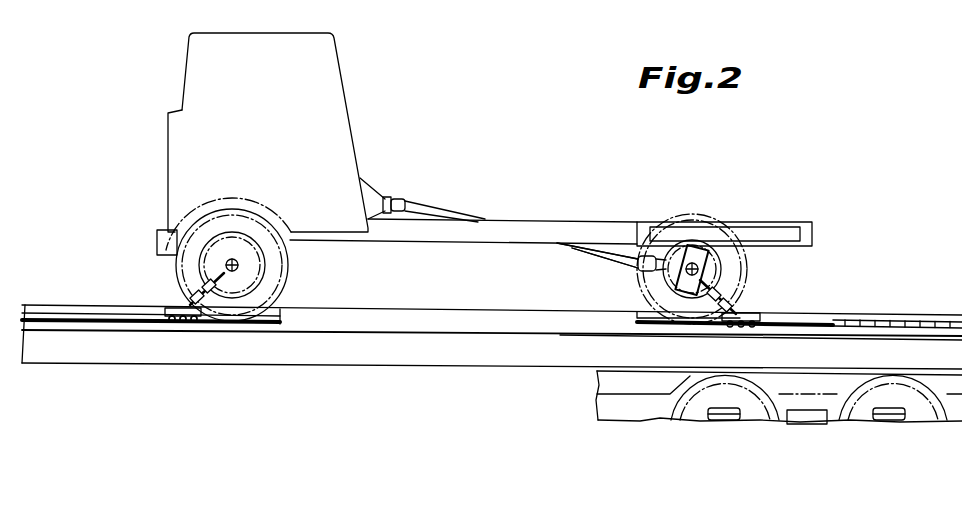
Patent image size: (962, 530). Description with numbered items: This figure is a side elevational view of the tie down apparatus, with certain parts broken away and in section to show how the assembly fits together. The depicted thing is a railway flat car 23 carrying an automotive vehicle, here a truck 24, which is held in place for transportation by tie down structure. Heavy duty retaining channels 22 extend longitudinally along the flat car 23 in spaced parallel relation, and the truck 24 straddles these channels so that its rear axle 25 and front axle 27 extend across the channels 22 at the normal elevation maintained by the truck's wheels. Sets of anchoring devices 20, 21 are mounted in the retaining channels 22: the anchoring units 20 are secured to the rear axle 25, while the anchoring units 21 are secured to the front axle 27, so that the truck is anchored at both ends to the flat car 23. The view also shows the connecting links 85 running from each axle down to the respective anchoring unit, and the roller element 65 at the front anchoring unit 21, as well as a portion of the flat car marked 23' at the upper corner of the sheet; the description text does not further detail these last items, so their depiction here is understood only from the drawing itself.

The anchoring device 20 is at (743, 310).
The anchoring device 21 is at (174, 292).
The retaining channel 22 is at (862, 318).
The railway flat car 23 is at (492, 326).
The rail 23' is at (935, 10).
The truck 24 is at (360, 156).
The rear axle 25 is at (682, 269).
The front axle 27 is at (238, 265).
The carriage rollers 65 is at (202, 302).
The strut 85 is at (205, 281).